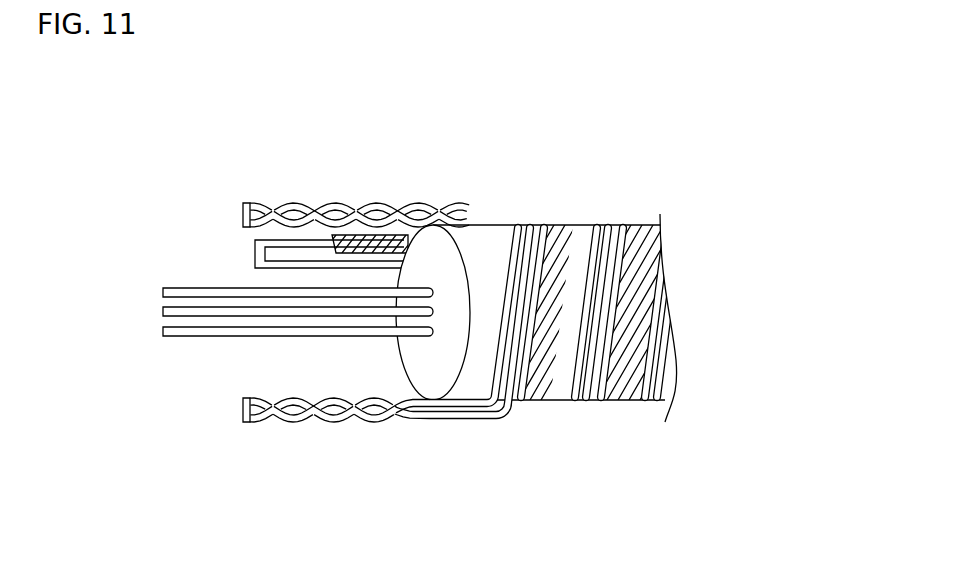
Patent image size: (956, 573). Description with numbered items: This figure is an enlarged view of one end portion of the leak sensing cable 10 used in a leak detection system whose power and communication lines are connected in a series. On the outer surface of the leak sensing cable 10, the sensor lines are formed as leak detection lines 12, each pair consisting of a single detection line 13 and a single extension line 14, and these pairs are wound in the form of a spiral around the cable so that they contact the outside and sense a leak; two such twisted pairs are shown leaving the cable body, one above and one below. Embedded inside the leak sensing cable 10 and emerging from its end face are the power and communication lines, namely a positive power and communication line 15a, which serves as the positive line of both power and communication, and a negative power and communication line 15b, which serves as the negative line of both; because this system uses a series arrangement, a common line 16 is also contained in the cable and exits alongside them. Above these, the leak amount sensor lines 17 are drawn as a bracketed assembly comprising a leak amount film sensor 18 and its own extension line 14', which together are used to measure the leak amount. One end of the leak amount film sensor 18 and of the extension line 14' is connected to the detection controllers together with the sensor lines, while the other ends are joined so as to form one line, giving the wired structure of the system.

The leak sensing cable 10 is at (581, 233).
The leak detection lines 12 is at (388, 313).
The detection line 13 is at (312, 207).
The extension line 14 is at (386, 312).
The extension line 14' is at (282, 259).
The positive power and communication line 15a is at (163, 290).
The negative power and communication line 15b is at (163, 309).
The common line 16 is at (163, 334).
The leak amount sensor lines 17 is at (259, 235).
The leak amount film sensor 18 is at (332, 248).